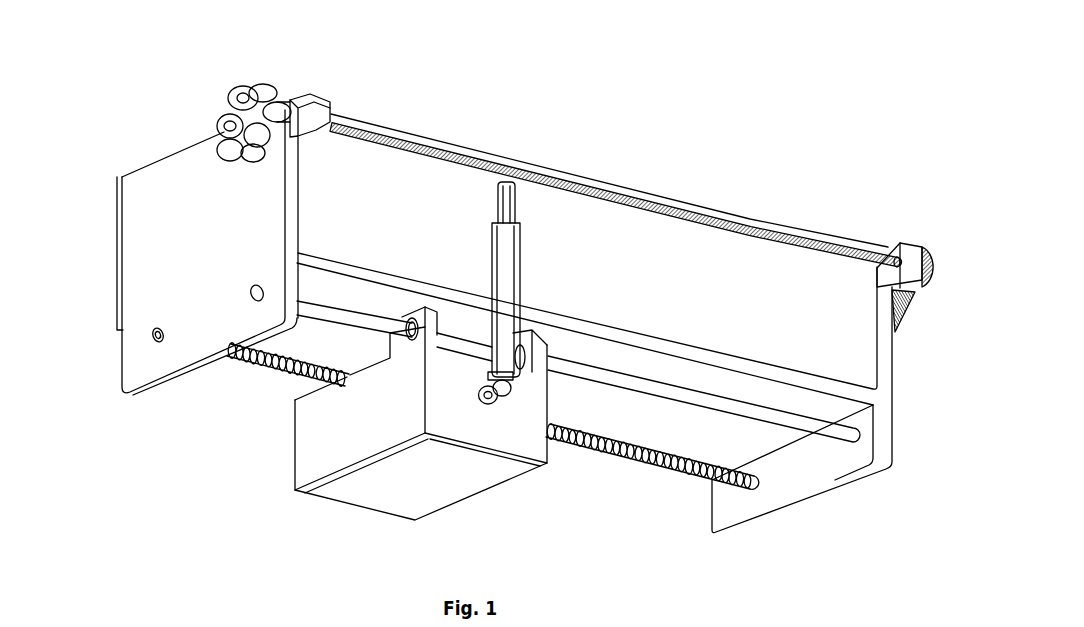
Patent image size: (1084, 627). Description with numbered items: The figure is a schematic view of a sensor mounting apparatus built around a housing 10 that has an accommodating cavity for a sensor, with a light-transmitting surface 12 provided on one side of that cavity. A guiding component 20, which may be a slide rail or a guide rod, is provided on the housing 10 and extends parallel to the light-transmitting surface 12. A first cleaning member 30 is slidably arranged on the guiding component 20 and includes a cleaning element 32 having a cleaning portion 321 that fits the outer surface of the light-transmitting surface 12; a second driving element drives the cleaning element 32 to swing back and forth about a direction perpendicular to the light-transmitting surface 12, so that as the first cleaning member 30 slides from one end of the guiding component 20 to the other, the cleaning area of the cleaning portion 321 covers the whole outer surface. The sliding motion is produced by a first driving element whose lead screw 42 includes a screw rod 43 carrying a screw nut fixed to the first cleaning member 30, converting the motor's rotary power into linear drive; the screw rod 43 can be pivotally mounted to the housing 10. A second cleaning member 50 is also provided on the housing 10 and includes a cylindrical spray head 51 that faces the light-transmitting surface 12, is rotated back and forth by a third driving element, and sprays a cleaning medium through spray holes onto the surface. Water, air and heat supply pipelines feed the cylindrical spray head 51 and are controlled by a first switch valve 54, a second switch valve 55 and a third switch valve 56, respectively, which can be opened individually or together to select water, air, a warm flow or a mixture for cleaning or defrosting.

The housing 10 is at (138, 248).
The light-transmitting surface 12 is at (855, 348).
The guiding component 20 is at (830, 443).
The first cleaning member 30 is at (262, 462).
The cleaning element 32 is at (552, 293).
The cleaning portion 321 is at (517, 204).
The lead screw 42 is at (641, 462).
The screw rod 43 is at (493, 457).
The second cleaning member 50 is at (240, 113).
The cylindrical spray head 51 is at (493, 163).
The first switch valve 54 is at (222, 101).
The second switch valve 55 is at (226, 143).
The third switch valve 56 is at (237, 158).